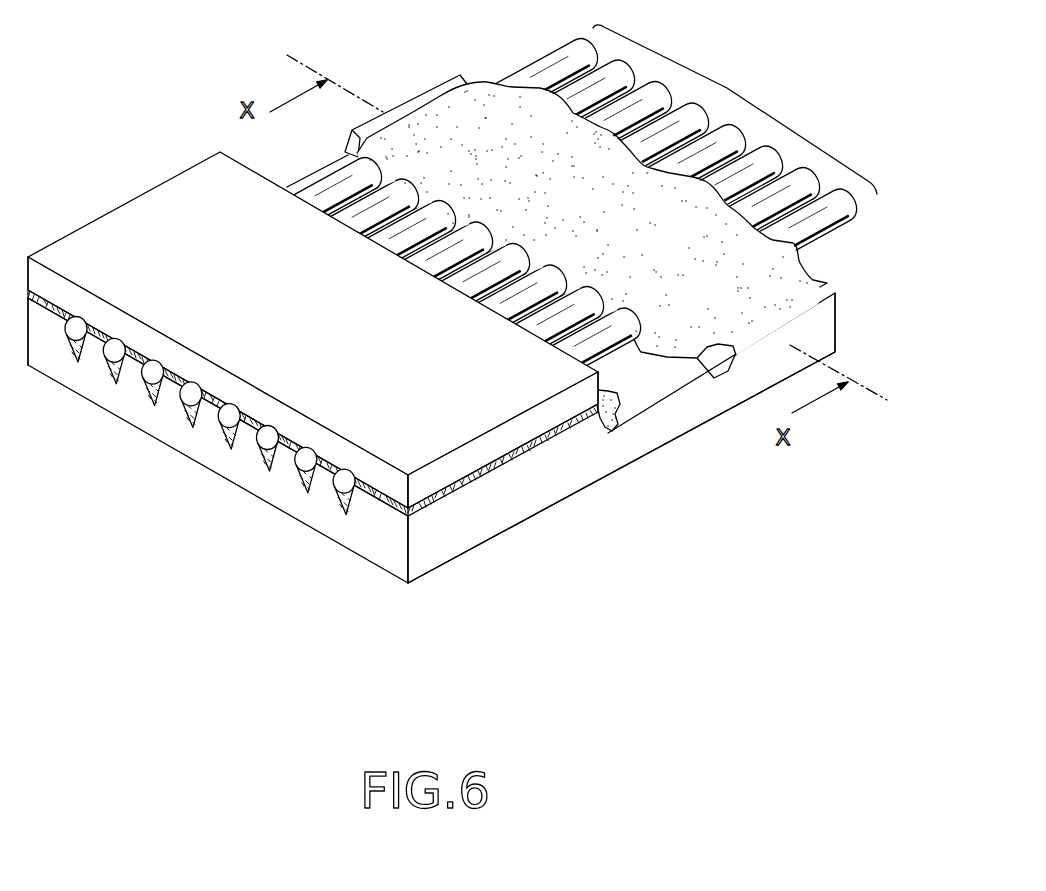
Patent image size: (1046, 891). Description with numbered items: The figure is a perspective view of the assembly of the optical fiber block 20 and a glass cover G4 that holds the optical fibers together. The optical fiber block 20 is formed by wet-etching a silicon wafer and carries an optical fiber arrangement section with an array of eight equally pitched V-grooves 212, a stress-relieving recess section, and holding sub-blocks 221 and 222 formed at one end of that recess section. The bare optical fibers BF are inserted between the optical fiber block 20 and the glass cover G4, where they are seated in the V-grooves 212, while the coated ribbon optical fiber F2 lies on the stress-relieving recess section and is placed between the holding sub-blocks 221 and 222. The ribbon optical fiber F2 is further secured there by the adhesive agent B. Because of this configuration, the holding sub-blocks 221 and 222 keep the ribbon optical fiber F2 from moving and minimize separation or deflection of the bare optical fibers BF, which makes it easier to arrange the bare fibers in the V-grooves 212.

The optical fiber block 20 is at (588, 473).
The glass cover G4 is at (142, 228).
The holding sub-block 221 is at (443, 93).
The holding sub-block 222 is at (820, 288).
The ribbon optical fiber F2 is at (592, 193).
The adhesive agent B is at (487, 88).
The bare optical fibers BF is at (356, 489).
The V-grooves 212 is at (347, 508).